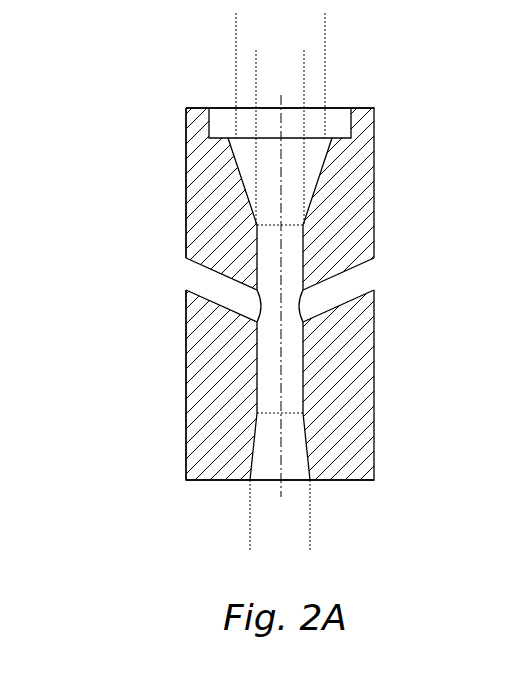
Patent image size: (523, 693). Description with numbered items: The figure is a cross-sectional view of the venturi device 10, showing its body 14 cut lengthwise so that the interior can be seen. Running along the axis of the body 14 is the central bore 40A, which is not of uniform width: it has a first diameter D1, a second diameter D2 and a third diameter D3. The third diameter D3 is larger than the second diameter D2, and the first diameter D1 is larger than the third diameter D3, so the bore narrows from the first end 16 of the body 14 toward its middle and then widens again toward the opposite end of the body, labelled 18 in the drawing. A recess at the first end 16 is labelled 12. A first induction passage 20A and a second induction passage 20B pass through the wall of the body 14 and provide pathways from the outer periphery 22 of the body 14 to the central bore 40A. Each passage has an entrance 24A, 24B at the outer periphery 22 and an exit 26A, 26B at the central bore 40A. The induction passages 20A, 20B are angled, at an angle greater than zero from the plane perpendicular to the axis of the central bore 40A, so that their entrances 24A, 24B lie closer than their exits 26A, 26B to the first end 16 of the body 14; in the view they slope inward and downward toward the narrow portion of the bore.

The venturi device 10 is at (145, 105).
The counterbore recess 12 is at (223, 133).
The body 14 is at (186, 212).
The first end 16 is at (358, 108).
The bottom surface 18 is at (215, 481).
The outer periphery 22 is at (186, 413).
The central bore 40A is at (292, 243).
The first induction passage 20A is at (363, 270).
The second induction passage 20B is at (195, 270).
The entrance 24A is at (373, 283).
The entrance 24B is at (186, 277).
The exit 26A is at (300, 300).
The exit 26B is at (260, 302).
The first diameter D1 is at (325, 26).
The second diameter D2 is at (304, 62).
The third diameter D3 is at (310, 537).